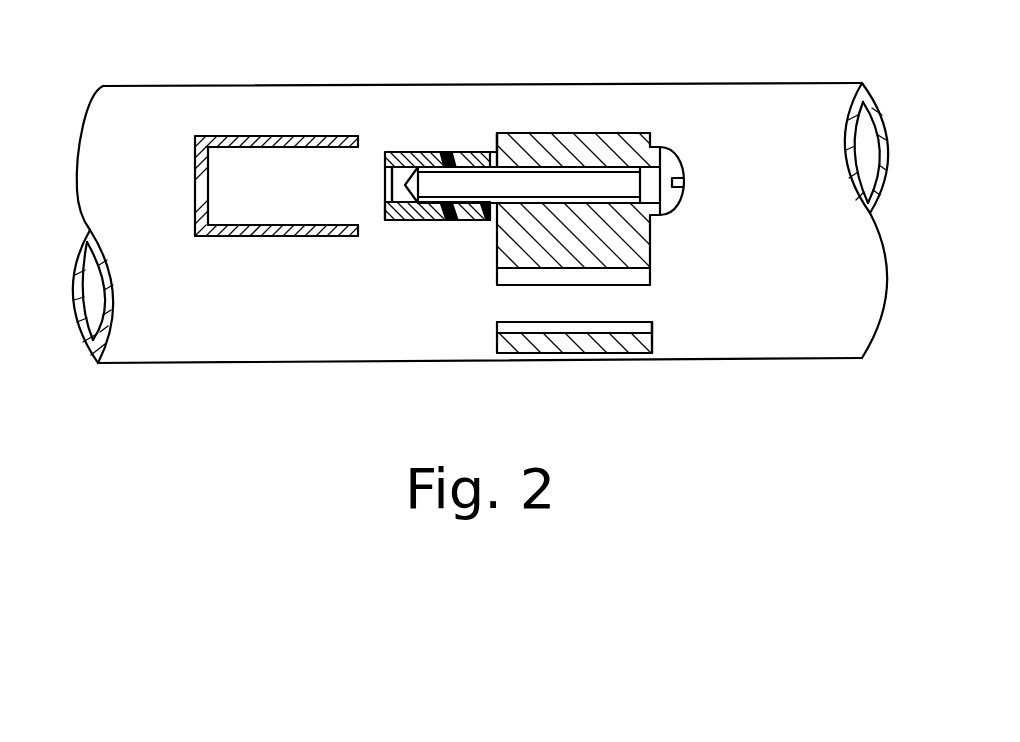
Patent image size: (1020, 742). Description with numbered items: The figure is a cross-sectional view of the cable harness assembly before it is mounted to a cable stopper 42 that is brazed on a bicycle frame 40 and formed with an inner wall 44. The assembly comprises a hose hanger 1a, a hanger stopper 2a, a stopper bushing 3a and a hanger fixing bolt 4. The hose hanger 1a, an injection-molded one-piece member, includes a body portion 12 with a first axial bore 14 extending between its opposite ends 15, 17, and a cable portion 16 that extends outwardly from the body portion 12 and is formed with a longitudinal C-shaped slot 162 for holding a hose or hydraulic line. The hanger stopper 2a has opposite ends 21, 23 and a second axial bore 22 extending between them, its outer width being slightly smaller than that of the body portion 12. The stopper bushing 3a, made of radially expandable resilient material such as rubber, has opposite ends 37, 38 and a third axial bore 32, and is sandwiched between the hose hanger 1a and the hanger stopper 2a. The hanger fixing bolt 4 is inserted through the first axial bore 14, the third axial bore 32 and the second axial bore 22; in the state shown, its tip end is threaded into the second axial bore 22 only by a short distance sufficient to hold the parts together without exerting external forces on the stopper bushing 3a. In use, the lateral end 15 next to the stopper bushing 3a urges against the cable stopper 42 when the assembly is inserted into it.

The bicycle frame 40 is at (142, 100).
The cable stopper 42 is at (235, 136).
The inner wall 44 is at (280, 147).
The second axial bore 22 is at (386, 183).
The end of hanger stopper 23 is at (384, 210).
The end of hanger stopper 21 is at (442, 210).
The end of stopper bushing 38 is at (440, 151).
The third axial bore 32 is at (448, 202).
The hanger stopper 2a is at (407, 152).
The first axial bore 14 is at (518, 196).
The body portion 12 is at (642, 133).
The stopper bushing 3a is at (467, 151).
The end of stopper bushing 37 is at (502, 152).
The hose hanger 1a is at (573, 132).
The end of body portion 17 is at (651, 240).
The hanger fixing bolt 4 is at (685, 160).
The cable portion 16 is at (593, 337).
The end of body portion 15 is at (497, 327).
The slot 162 is at (654, 307).